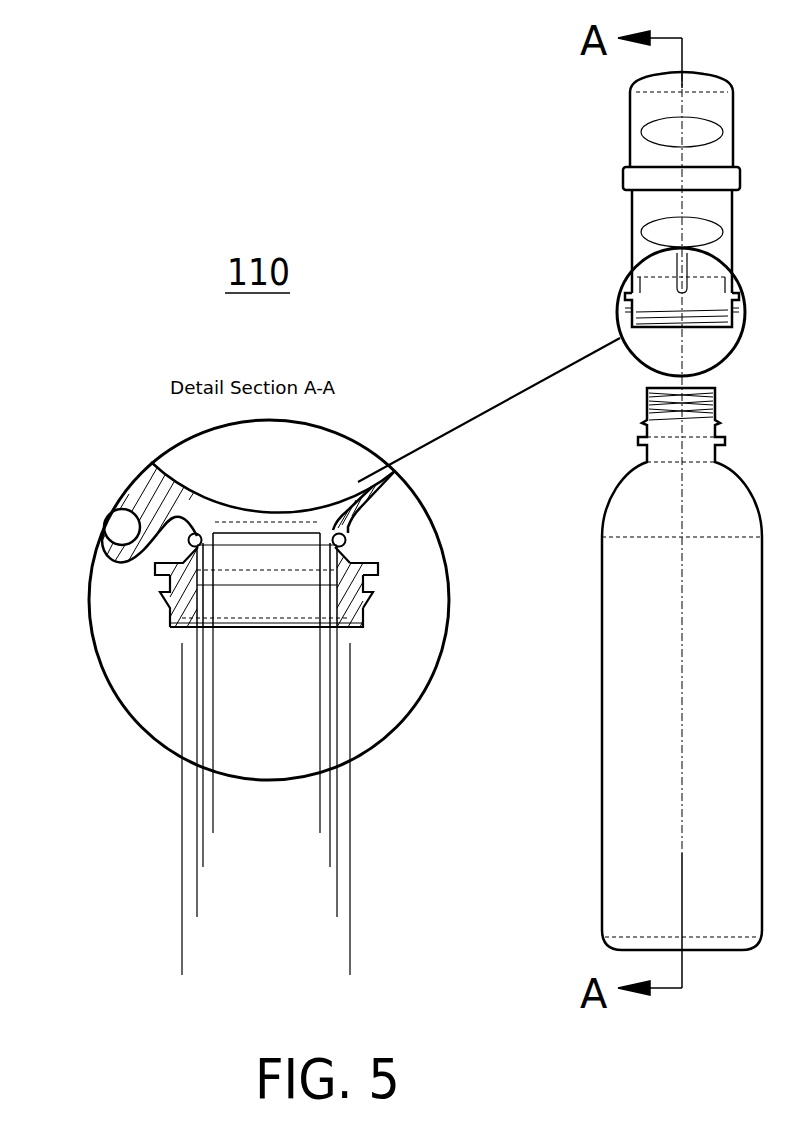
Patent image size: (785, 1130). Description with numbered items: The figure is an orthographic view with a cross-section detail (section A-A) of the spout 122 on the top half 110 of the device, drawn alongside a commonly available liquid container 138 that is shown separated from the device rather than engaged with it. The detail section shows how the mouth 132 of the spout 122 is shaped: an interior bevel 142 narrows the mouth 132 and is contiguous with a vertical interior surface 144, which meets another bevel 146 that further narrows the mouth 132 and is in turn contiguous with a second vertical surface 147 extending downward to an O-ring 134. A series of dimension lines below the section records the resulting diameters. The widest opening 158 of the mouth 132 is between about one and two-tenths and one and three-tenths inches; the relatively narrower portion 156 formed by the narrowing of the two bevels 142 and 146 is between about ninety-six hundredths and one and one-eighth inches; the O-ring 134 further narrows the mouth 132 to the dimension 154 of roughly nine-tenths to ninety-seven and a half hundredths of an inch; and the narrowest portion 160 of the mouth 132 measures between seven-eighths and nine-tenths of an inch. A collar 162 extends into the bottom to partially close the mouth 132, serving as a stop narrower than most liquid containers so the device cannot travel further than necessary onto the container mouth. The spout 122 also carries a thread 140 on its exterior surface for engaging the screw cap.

The top half 110 is at (192, 453).
The collar 162 is at (322, 518).
The O-ring 134 is at (188, 538).
The spout 122 is at (157, 568).
The thread 140 is at (160, 595).
The second vertical surface 147 is at (360, 552).
The bevel 146 is at (368, 570).
The vertical interior surface 144 is at (378, 592).
The interior bevel 142 is at (378, 622).
The mouth 132 is at (283, 652).
The narrowest portion 160 is at (307, 813).
The dimension 154 is at (317, 847).
The relatively narrower portion 156 is at (324, 897).
The widest opening 158 is at (337, 957).
The liquid container 138 is at (635, 832).